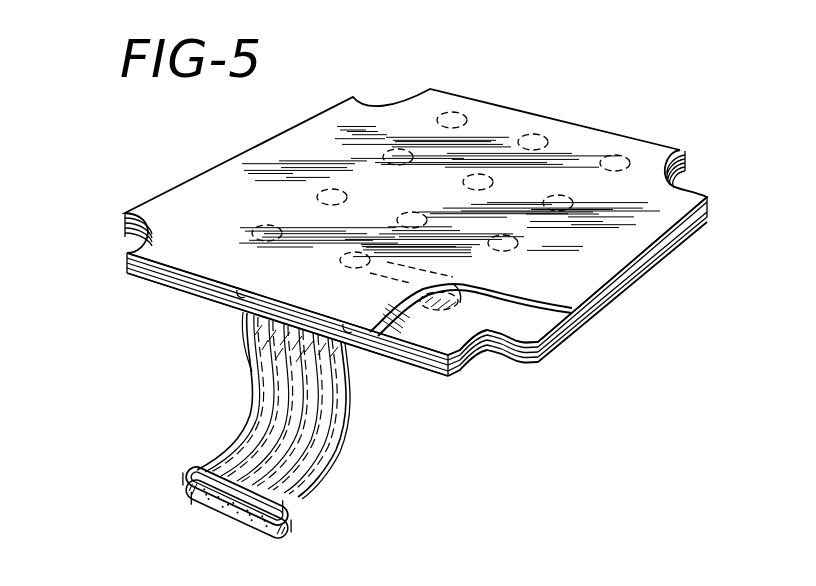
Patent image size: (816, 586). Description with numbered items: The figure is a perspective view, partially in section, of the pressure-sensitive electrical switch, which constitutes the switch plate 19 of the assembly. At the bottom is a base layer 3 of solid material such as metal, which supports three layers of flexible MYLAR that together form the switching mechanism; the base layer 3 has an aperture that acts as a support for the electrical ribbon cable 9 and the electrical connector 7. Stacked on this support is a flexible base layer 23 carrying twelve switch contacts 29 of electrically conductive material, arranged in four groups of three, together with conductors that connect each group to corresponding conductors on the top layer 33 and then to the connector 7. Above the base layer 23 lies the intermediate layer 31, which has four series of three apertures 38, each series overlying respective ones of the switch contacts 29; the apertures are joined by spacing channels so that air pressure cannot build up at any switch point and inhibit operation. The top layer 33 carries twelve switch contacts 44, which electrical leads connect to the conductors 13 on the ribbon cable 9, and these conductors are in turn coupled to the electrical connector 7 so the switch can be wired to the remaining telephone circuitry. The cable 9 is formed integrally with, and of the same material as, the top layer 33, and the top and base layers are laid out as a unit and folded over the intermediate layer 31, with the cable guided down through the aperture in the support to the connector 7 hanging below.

The switch plate 19 is at (140, 185).
The base layer 3 is at (562, 338).
The base layer 23 is at (602, 298).
The intermediate layer 31 is at (637, 270).
The top layer 33 is at (672, 245).
The switch contacts 29 is at (542, 137).
The apertures 38 is at (447, 285).
The switch contacts 44 is at (455, 284).
The ribbon cable 9 is at (282, 394).
The conductors 13 is at (280, 423).
The electrical connector 7 is at (293, 523).